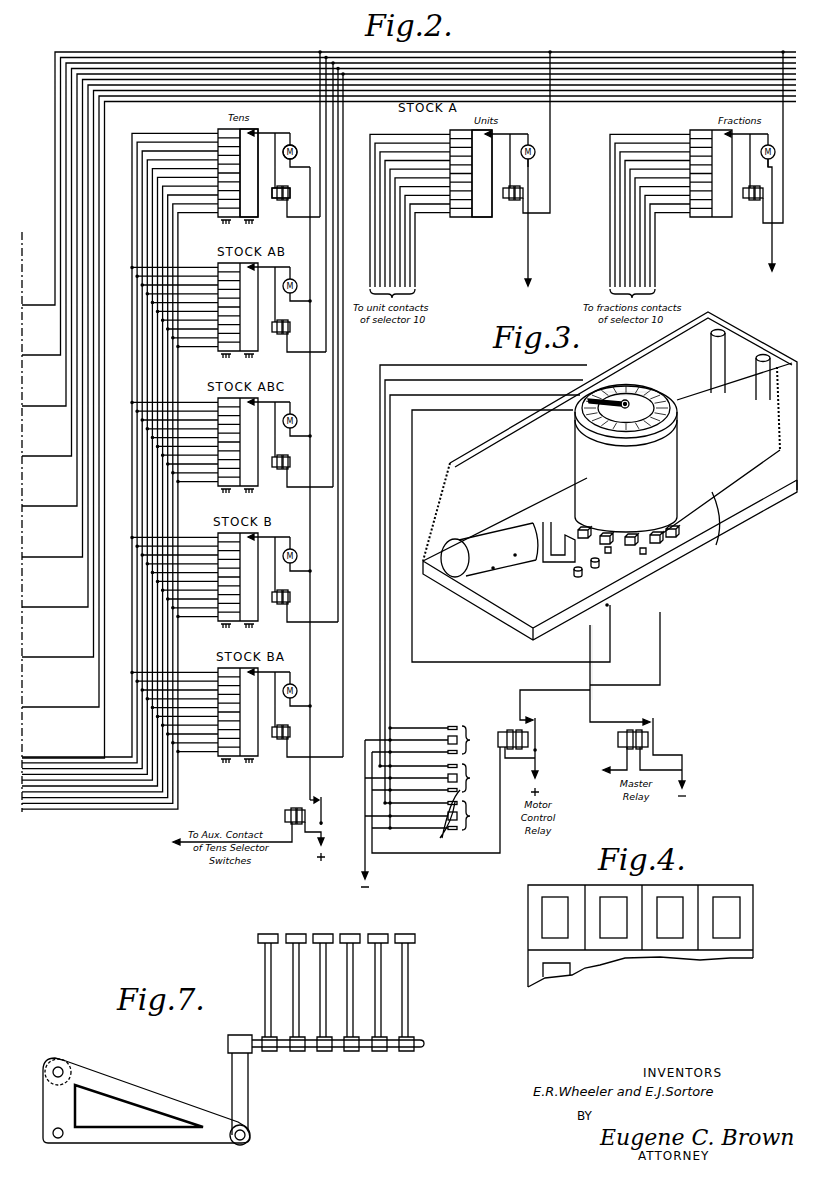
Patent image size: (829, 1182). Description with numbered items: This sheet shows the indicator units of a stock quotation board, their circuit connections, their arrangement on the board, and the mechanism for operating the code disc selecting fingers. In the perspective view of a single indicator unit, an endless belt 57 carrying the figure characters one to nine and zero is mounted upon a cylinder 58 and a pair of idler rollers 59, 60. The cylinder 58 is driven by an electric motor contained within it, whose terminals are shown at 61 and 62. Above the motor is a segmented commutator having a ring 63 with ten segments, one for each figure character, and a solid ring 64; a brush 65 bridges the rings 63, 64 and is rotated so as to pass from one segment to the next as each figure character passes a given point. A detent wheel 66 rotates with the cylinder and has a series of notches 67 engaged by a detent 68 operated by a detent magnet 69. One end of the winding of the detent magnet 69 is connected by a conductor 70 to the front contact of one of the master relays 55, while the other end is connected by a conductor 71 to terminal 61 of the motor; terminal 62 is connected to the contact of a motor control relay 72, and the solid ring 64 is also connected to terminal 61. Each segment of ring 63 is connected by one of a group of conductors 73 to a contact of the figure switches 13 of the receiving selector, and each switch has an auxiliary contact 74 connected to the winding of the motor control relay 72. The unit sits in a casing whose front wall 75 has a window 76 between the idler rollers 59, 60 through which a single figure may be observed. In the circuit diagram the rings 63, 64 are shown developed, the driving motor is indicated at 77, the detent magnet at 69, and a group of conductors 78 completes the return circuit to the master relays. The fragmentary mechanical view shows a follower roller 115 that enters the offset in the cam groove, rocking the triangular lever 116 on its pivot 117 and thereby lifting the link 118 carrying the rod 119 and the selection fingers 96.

In FIG. 2, the figure switches 13 is at (425, 728).
In FIG. 2, the master relay 55 is at (618, 742).
In FIG. 3, the endless belt 57 is at (683, 462).
In FIG. 3, the cylinder 58 is at (670, 410).
In FIG. 3, the idler roller 59 is at (727, 346).
In FIG. 3, the idler roller 60 is at (769, 358).
In FIG. 3, the motor terminal 61 is at (574, 569).
In FIG. 3, the motor terminal 62 is at (591, 559).
In FIG. 2, the segmented commutator ring 63 is at (218, 131).
In FIG. 3, the segmented commutator ring 63 is at (648, 389).
In FIG. 2, the solid commutator ring 64 is at (258, 131).
In FIG. 3, the solid commutator ring 64 is at (662, 391).
In FIG. 3, the brush 65 is at (600, 398).
In FIG. 3, the detent wheel 66 is at (652, 542).
In FIG. 3, the notches 67 is at (643, 556).
In FIG. 3, the detent 68 is at (556, 538).
In FIG. 2, the detent magnet 69 is at (275, 199).
In FIG. 3, the detent magnet 69 is at (484, 545).
In FIG. 3, the conductor 70 is at (590, 648).
In FIG. 3, the conductor 71 is at (546, 575).
In FIG. 2, the motor control relay 72 is at (297, 810).
In FIG. 2, the conductors 73 is at (137, 228).
In FIG. 2, the auxiliary contact 74 is at (445, 822).
In FIG. 3, the front wall 75 is at (727, 317).
In FIG. 4, the front wall 75 is at (541, 888).
In FIG. 4, the window 76 is at (542, 910).
In FIG. 2, the driving motor 77 is at (297, 150).
In FIG. 2, the conductors 78 is at (63, 196).
In FIG. 7, the selection fingers 96 is at (408, 998).
In FIG. 7, the follower roller 115 is at (62, 1068).
In FIG. 7, the triangular lever 116 is at (148, 1093).
In FIG. 7, the pivot 117 is at (58, 1140).
In FIG. 7, the link 118 is at (248, 1100).
In FIG. 7, the rod 119 is at (310, 1050).